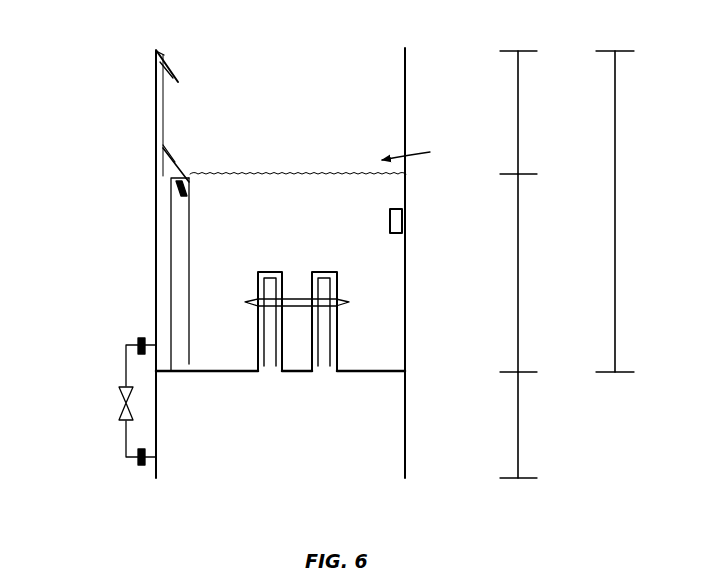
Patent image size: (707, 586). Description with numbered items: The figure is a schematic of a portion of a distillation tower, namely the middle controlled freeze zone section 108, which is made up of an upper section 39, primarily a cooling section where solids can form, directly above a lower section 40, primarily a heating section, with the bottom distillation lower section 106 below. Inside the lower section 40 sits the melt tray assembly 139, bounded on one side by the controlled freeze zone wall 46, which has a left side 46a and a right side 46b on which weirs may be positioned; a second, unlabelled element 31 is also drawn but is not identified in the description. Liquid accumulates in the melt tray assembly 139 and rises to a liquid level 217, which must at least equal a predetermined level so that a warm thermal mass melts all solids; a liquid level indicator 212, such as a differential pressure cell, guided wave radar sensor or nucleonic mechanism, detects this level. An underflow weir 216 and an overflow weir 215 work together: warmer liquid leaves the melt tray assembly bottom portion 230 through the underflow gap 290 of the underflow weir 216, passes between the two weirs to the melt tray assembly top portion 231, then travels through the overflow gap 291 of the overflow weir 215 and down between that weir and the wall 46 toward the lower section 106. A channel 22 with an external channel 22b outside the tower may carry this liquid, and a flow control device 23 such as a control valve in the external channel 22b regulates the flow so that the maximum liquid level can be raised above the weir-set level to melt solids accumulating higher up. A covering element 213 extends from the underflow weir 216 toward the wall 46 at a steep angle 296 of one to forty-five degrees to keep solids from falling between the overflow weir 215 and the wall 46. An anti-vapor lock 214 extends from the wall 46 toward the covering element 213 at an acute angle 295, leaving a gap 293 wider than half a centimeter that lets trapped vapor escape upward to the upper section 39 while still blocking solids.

The controlled freeze zone wall 46 is at (148, 148).
The left side of the controlled freeze zone wall 46a is at (154, 297).
The right side of the controlled freeze zone wall 46b is at (409, 330).
The anti-vapor lock 214 is at (157, 50).
The gap 293 is at (175, 78).
The angle 295 is at (165, 64).
The covering element 213 is at (170, 158).
The angle 296 is at (178, 170).
The overflow weir 215 is at (172, 238).
The underflow weir 216 is at (190, 270).
The overflow gap 291 is at (187, 189).
The liquid level 217 is at (295, 173).
The melt tray assembly top portion 231 is at (427, 155).
The liquid level indicator 212 is at (389, 218).
The melt tray assembly 139 is at (330, 255).
The underflow gap 290 is at (186, 357).
The melt tray assembly bottom portion 230 is at (345, 373).
The heater band 31 is at (404, 298).
The channel 22 is at (114, 405).
The flow control device 23 is at (120, 385).
The external channel 22b is at (120, 454).
The upper section 39 is at (519, 110).
The lower section 40 is at (519, 279).
The lower section 106 is at (519, 425).
The middle controlled freeze zone section 108 is at (616, 211).